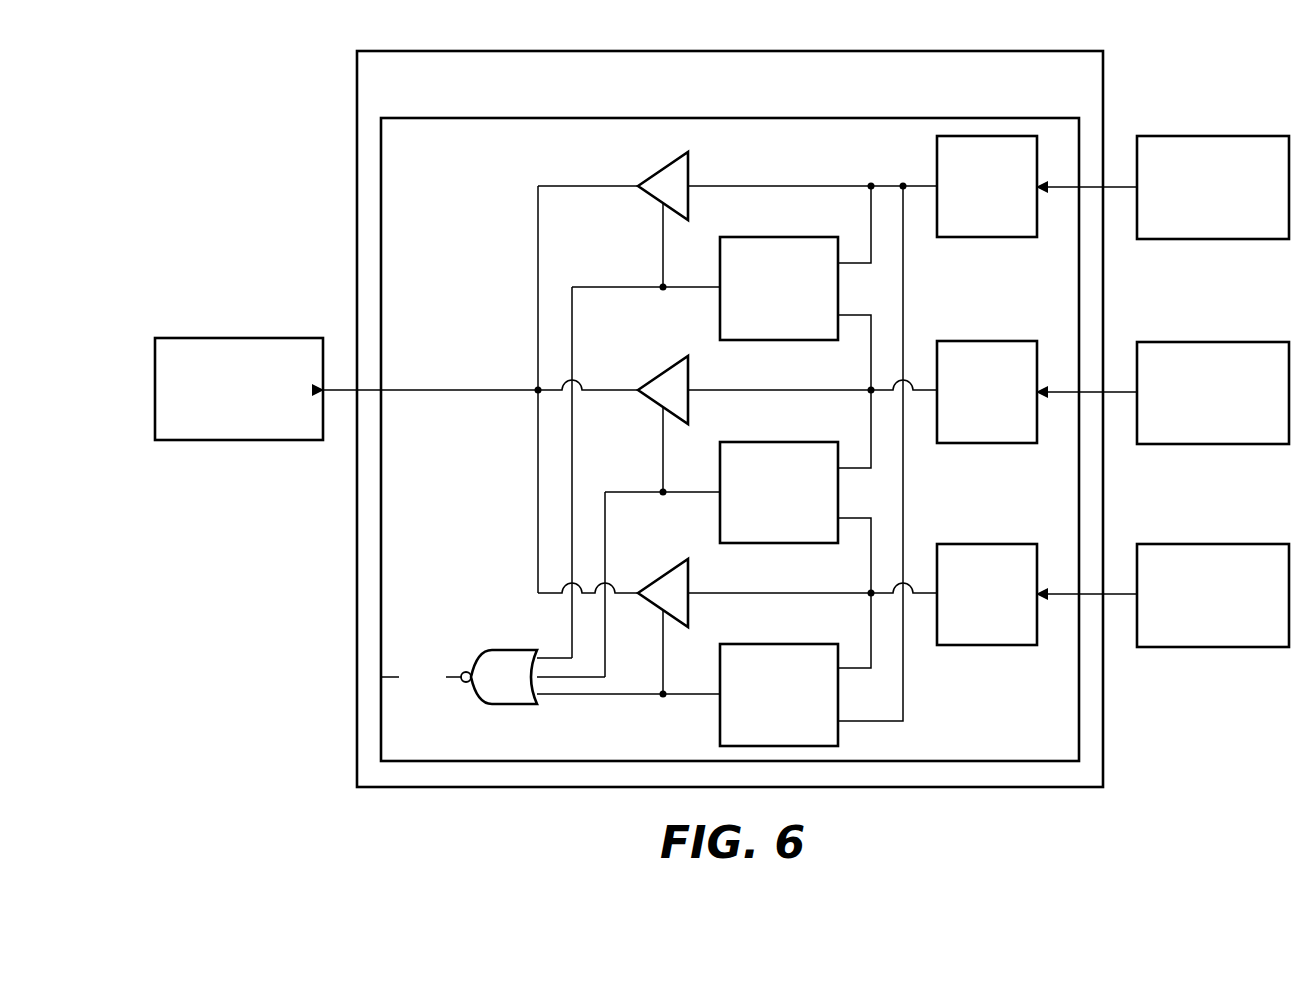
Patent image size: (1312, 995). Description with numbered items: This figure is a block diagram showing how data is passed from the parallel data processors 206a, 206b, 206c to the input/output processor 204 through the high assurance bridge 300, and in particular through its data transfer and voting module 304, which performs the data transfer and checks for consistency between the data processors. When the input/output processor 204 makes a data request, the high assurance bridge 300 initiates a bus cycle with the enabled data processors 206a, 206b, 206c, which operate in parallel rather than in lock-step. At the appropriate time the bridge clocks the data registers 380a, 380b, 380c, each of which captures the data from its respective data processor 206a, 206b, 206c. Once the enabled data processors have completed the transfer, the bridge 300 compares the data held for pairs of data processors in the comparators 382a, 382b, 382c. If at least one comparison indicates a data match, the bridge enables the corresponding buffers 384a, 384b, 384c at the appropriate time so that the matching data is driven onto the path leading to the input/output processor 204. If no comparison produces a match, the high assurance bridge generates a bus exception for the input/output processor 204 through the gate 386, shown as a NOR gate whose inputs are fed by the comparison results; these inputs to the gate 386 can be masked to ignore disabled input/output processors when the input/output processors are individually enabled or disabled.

The high assurance bridge 300 is at (356, 115).
The data transfer and voting module 304 is at (722, 118).
The input/output processor 204 is at (240, 338).
The data processor 206a is at (1213, 136).
The data processor 206b is at (1213, 342).
The data processor 206c is at (1213, 544).
The data register 380a is at (988, 237).
The data register 380b is at (987, 341).
The data register 380c is at (987, 544).
The comparator 382a is at (782, 237).
The comparator 382b is at (782, 442).
The comparator 382c is at (782, 644).
The buffer 384a is at (665, 170).
The buffer 384b is at (662, 371).
The buffer 384c is at (662, 573).
The gate 386 is at (512, 650).